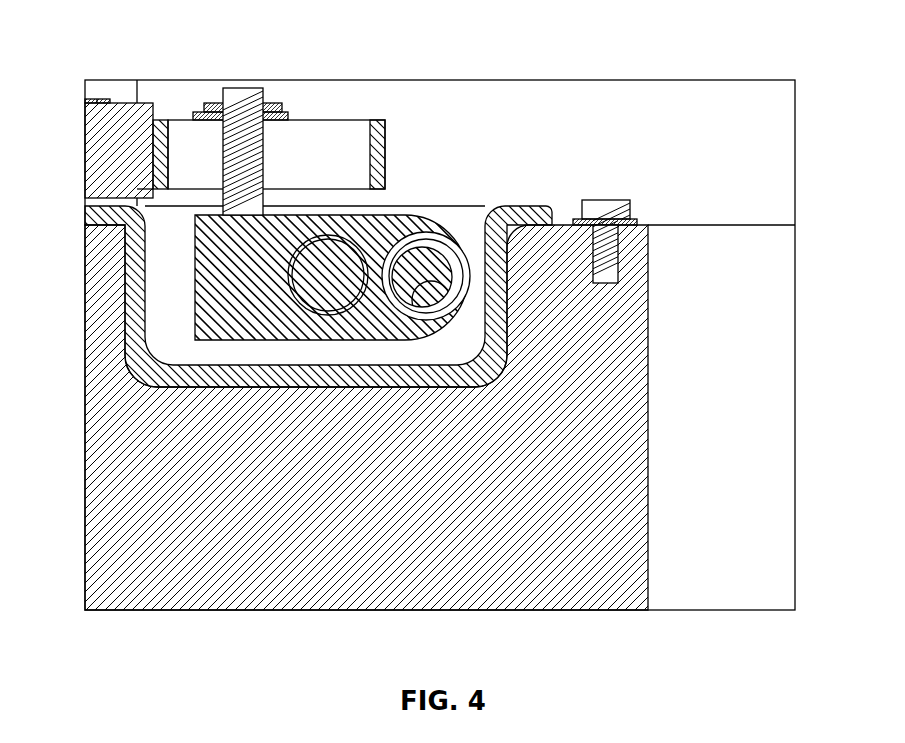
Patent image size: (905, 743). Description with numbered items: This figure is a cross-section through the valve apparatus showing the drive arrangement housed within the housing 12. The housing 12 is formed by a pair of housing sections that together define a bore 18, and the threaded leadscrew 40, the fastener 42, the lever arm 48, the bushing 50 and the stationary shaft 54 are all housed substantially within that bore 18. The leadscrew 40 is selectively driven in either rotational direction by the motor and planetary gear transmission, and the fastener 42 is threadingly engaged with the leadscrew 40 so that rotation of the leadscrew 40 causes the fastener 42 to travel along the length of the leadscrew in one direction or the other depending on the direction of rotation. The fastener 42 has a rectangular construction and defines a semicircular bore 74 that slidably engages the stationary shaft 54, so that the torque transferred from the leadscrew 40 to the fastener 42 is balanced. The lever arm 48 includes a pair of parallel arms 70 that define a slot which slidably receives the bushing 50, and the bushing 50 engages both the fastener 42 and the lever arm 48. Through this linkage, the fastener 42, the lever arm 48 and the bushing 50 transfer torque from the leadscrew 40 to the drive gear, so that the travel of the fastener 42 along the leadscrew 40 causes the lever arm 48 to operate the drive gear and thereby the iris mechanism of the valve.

The housing 12 is at (796, 342).
The bore 18 is at (150, 364).
The threaded leadscrew 40 is at (382, 222).
The fastener 42 is at (405, 235).
The lever arm 48 is at (161, 121).
The bushing 50 is at (242, 92).
The stationary shaft 54 is at (442, 248).
The parallel arms 70 is at (333, 145).
The semicircular bore 74 is at (447, 311).